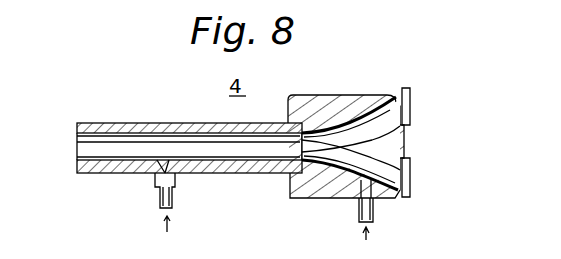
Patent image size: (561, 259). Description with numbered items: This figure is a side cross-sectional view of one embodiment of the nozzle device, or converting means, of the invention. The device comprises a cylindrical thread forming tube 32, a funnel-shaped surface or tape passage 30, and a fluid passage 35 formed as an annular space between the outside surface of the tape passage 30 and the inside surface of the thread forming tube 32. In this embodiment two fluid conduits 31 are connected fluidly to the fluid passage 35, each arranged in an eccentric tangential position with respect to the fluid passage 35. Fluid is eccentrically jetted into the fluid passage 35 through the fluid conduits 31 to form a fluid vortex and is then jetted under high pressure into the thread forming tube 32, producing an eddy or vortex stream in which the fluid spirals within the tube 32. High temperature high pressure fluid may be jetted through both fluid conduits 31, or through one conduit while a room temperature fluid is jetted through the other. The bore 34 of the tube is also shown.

The tape passage 30 is at (340, 128).
The fluid conduit 31 is at (175, 184).
The thread forming tube 32 is at (121, 123).
The tube bore 34 is at (77, 147).
The fluid passage 35 is at (335, 185).